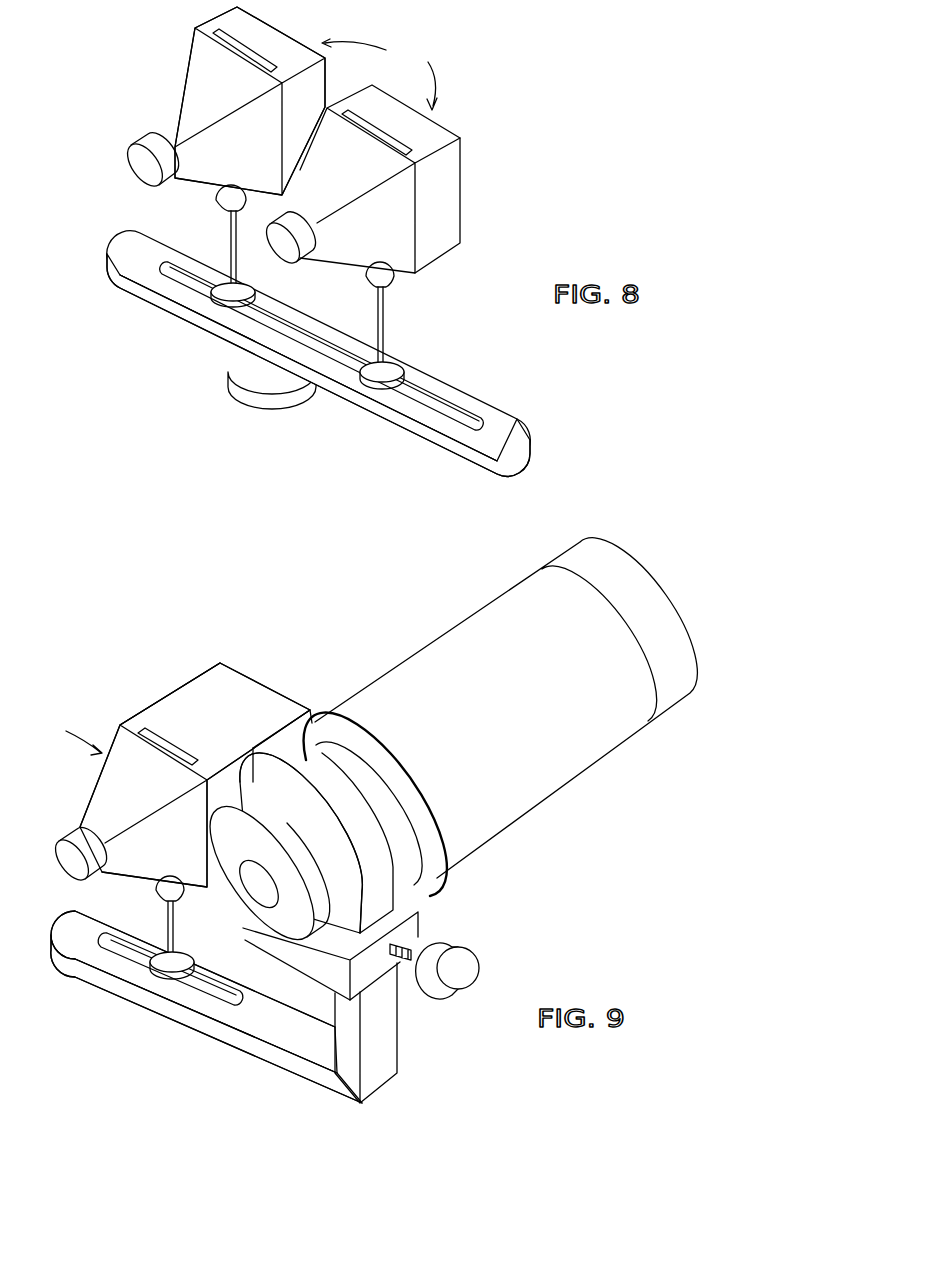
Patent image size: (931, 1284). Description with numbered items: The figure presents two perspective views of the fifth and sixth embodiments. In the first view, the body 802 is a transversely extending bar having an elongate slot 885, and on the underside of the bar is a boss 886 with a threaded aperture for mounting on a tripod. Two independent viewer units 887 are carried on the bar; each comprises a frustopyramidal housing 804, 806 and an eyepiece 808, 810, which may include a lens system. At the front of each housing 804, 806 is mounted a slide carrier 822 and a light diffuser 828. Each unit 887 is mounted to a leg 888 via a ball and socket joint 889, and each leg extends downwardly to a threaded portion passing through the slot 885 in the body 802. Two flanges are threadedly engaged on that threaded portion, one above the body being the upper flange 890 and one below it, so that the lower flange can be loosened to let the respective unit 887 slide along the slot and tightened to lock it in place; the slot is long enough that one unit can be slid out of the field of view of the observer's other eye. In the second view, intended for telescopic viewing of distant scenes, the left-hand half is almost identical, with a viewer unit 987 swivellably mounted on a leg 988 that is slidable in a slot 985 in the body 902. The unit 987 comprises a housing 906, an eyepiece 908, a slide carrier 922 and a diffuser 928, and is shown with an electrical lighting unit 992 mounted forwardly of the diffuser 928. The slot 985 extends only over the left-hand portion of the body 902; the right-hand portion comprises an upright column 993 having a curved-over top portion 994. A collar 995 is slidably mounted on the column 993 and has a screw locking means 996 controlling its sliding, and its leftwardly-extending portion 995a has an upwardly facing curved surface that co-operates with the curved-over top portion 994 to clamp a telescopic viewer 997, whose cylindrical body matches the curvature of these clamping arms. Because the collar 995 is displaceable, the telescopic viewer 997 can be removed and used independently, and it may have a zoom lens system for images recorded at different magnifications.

In FIG. 8, the body 802 is at (530, 440).
In FIG. 8, the frustopyramidal housing 804 is at (176, 80).
In FIG. 8, the frustopyramidal housing 806 is at (407, 257).
In FIG. 8, the eyepiece 808 is at (147, 138).
In FIG. 8, the eyepiece 810 is at (303, 262).
In FIG. 8, the slide carrier 822 is at (407, 142).
In FIG. 8, the light diffuser 828 is at (462, 197).
In FIG. 8, the elongate slot 885 is at (460, 423).
In FIG. 8, the boss 886 is at (232, 390).
In FIG. 8, the viewer unit 887 is at (379, 74).
In FIG. 8, the leg 888 is at (384, 307).
In FIG. 8, the ball and socket joint 889 is at (395, 280).
In FIG. 8, the upper flange 890 is at (395, 366).
In FIG. 9, the body 902 is at (363, 1102).
In FIG. 9, the housing 906 is at (107, 790).
In FIG. 9, the eyepiece 908 is at (70, 840).
In FIG. 9, the slide carrier 922 is at (139, 733).
In FIG. 9, the diffuser 928 is at (158, 700).
In FIG. 9, the slot 985 is at (207, 990).
In FIG. 9, the viewer unit 987 is at (70, 730).
In FIG. 9, the leg 988 is at (176, 928).
In FIG. 9, the electrical lighting unit 992 is at (277, 690).
In FIG. 9, the upright column 993 is at (398, 1028).
In FIG. 9, the curved-over top portion 994 is at (319, 833).
In FIG. 9, the collar 995 is at (418, 912).
In FIG. 9, the leftwardly-extending portion 995a is at (292, 960).
In FIG. 9, the screw locking means 996 is at (466, 958).
In FIG. 9, the telescopic viewer 997 is at (557, 785).